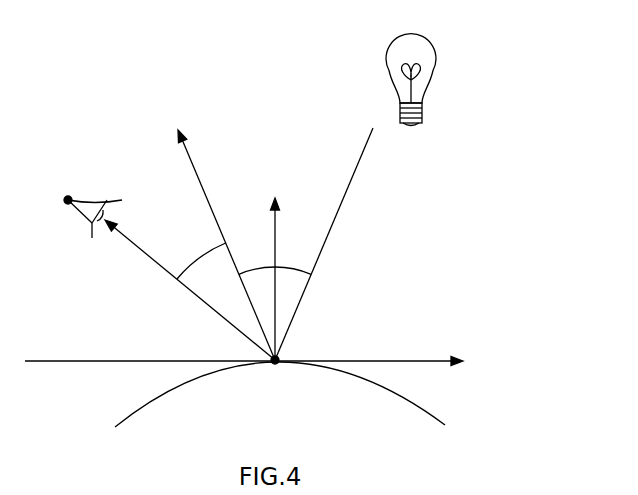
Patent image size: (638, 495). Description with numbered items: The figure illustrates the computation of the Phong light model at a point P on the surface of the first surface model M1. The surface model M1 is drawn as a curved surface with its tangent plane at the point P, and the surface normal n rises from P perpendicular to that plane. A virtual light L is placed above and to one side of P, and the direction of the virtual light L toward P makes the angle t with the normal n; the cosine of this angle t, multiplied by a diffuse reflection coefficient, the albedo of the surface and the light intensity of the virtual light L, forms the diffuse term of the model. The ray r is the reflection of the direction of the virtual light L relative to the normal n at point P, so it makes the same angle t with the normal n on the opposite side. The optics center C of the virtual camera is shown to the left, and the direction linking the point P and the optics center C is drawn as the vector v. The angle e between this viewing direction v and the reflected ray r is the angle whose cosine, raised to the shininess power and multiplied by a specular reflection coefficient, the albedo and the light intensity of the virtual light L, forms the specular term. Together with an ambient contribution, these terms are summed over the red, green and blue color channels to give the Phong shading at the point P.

The optics center of the virtual camera C is at (78, 210).
The virtual light L is at (355, 197).
The point of the surface P is at (275, 385).
The first surface model M1 is at (417, 410).
The view vector v is at (127, 275).
The surface normal n is at (263, 158).
The reflection ray r is at (203, 121).
The angle between view and reflection vectors e is at (197, 248).
The angle between the surface normal and the direction of the virtual light t is at (275, 253).